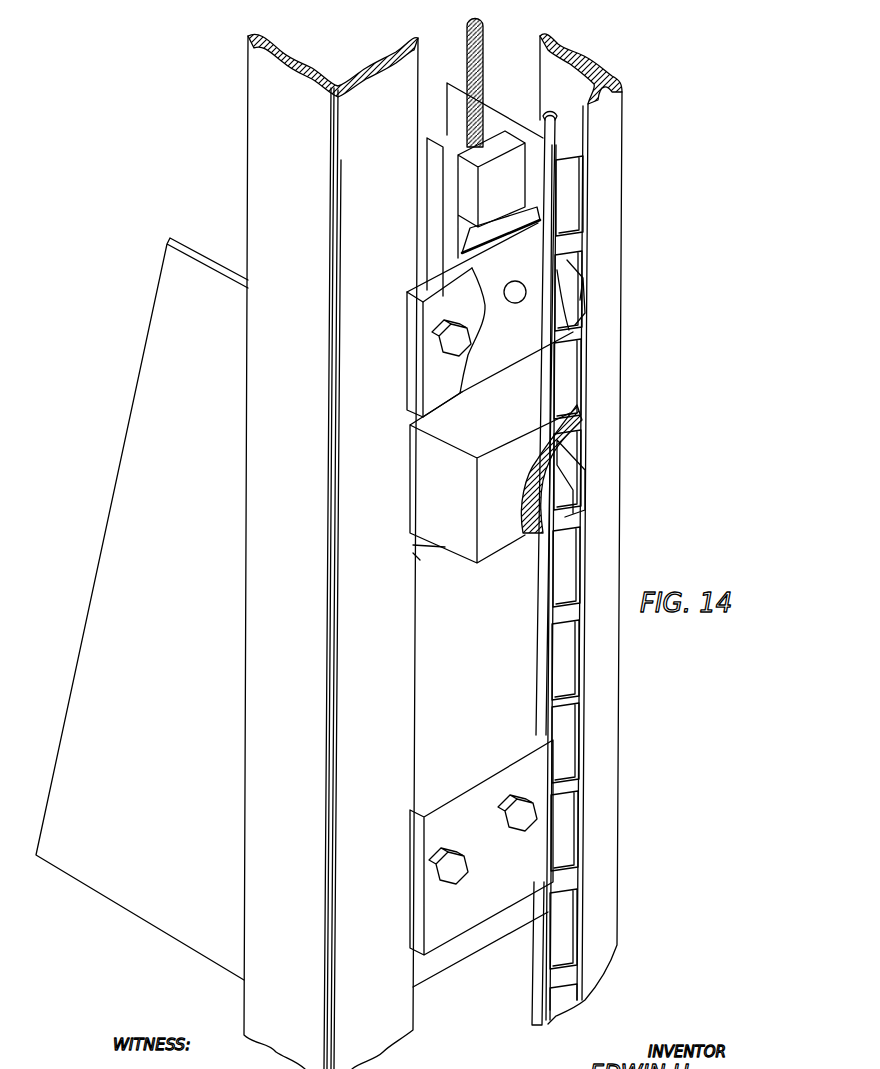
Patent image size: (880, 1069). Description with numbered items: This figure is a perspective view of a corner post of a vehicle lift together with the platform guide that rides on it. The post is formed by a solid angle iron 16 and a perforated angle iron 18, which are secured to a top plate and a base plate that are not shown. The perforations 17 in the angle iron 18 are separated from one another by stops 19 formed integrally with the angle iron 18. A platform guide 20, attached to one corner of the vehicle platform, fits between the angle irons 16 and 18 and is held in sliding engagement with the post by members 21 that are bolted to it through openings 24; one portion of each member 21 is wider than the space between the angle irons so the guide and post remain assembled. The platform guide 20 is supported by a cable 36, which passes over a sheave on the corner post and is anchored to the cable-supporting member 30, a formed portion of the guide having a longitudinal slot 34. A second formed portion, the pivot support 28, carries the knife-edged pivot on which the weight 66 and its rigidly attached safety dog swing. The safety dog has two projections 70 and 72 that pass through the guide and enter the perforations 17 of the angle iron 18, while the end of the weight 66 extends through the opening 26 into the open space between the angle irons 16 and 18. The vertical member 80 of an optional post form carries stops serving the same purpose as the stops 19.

The solid angle iron 16 is at (300, 828).
The perforations 17 is at (570, 380).
The perforated angle iron 18 is at (595, 940).
The stops 19 is at (578, 160).
The platform guide 20 is at (175, 440).
The members 21 is at (455, 318).
The openings 24 is at (525, 289).
The opening 26 is at (430, 547).
The pivot support 28 is at (517, 222).
The cable-supporting member 30 is at (500, 140).
The longitudinal slot 34 is at (460, 148).
The cable 36 is at (487, 63).
The weight 66 is at (494, 540).
The projection 70 is at (573, 307).
The projection 72 is at (577, 495).
The vertical member 80 is at (583, 442).